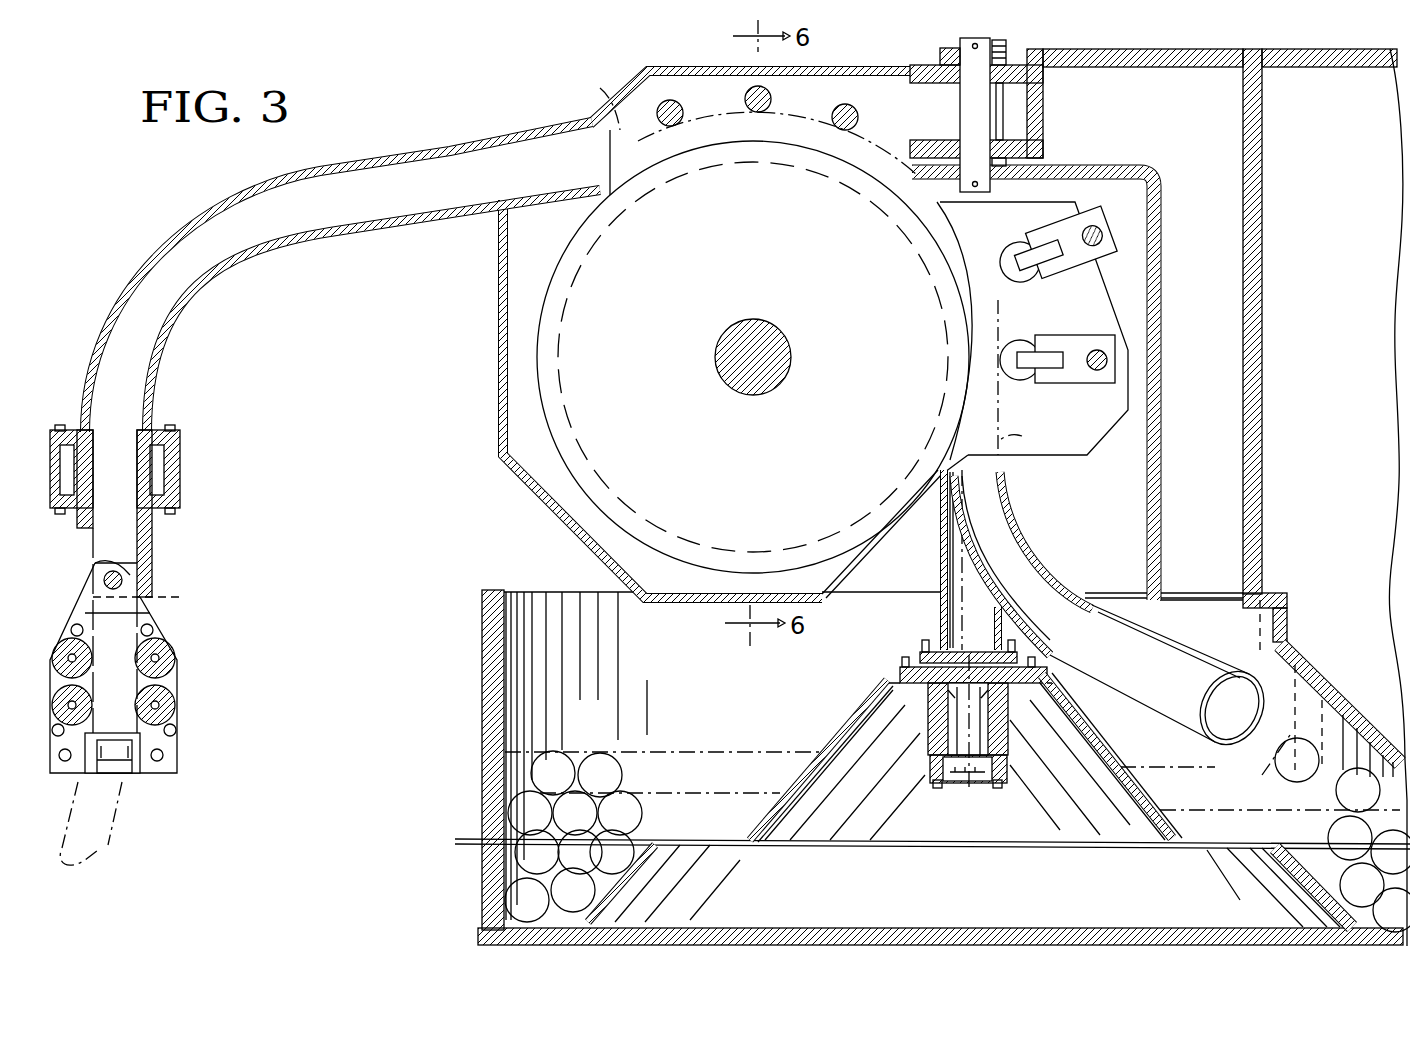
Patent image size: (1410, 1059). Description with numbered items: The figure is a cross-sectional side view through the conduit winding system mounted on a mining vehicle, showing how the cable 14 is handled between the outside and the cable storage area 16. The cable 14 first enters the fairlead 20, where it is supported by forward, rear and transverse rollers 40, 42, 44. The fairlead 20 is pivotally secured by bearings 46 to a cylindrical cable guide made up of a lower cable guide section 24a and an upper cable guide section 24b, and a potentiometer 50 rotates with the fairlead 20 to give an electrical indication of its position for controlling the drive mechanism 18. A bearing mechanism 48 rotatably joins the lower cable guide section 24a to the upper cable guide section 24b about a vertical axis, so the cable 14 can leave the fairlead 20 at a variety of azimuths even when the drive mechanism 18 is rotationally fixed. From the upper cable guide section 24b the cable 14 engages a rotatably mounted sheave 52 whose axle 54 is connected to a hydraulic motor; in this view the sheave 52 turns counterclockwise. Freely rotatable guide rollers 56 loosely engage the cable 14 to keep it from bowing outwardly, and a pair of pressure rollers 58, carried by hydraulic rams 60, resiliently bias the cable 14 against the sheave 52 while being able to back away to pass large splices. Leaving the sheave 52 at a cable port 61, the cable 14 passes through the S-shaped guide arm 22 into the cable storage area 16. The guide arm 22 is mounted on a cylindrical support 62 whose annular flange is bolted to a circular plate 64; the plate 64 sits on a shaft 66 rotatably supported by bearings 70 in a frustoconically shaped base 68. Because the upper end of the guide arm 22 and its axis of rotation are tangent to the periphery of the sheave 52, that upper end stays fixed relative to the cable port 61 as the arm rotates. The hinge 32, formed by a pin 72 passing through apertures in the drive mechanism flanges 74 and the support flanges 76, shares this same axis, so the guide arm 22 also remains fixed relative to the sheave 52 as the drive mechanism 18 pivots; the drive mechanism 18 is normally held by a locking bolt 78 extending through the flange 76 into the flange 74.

The cable 14 is at (132, 856).
The cable storage area 16 is at (722, 720).
The drive mechanism 18 is at (649, 52).
The fairlead 20 is at (165, 632).
The guide arm 22 is at (1015, 536).
The lower cable guide section 24a is at (128, 538).
The upper cable guide section 24b is at (165, 365).
The hinge 32 is at (962, 42).
The forward rollers 40 is at (55, 693).
The rear rollers 42 is at (172, 700).
The transverse rollers 44 is at (125, 778).
The bearings 46 is at (125, 582).
The bearing mechanism 48 is at (182, 472).
The potentiometer 50 is at (154, 605).
The sheave 52 is at (540, 370).
The axle 54 is at (788, 352).
The guide rollers 56 is at (683, 106).
The pressure rollers 58 is at (1012, 282).
The hydraulic rams 60 is at (1073, 342).
The cable port 61 is at (978, 468).
The cylindrical support 62 is at (938, 625).
The circular plate 64 is at (922, 656).
The shaft 66 is at (983, 730).
The frustoconically shaped base 68 is at (1108, 752).
The bearings 70 is at (926, 698).
The pin 72 is at (964, 108).
The drive mechanism flanges 74 is at (918, 66).
The support flanges 76 is at (1045, 70).
The locking bolt 78 is at (1008, 45).